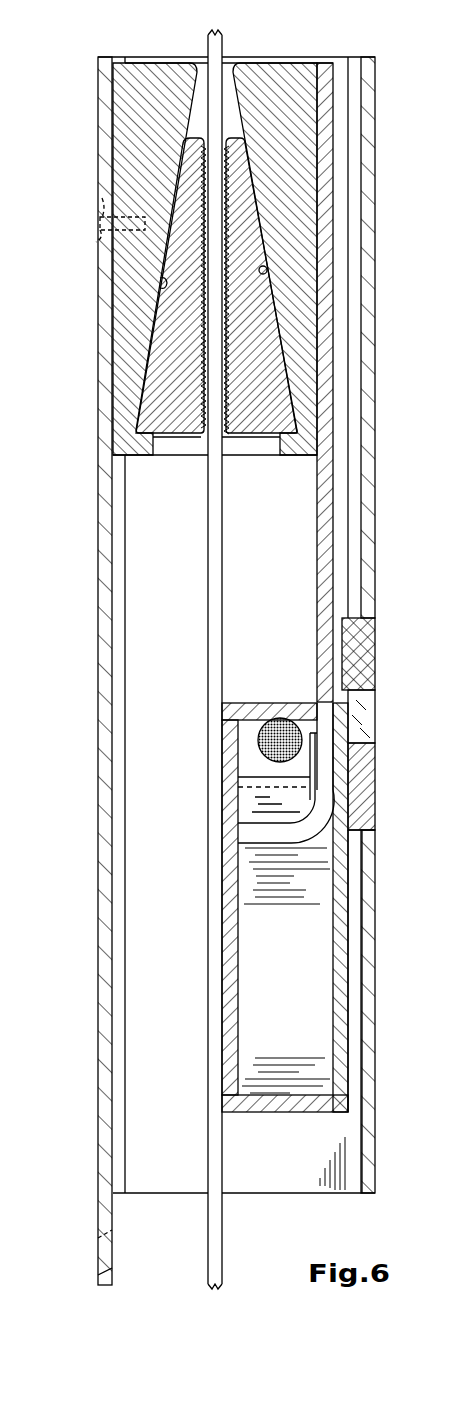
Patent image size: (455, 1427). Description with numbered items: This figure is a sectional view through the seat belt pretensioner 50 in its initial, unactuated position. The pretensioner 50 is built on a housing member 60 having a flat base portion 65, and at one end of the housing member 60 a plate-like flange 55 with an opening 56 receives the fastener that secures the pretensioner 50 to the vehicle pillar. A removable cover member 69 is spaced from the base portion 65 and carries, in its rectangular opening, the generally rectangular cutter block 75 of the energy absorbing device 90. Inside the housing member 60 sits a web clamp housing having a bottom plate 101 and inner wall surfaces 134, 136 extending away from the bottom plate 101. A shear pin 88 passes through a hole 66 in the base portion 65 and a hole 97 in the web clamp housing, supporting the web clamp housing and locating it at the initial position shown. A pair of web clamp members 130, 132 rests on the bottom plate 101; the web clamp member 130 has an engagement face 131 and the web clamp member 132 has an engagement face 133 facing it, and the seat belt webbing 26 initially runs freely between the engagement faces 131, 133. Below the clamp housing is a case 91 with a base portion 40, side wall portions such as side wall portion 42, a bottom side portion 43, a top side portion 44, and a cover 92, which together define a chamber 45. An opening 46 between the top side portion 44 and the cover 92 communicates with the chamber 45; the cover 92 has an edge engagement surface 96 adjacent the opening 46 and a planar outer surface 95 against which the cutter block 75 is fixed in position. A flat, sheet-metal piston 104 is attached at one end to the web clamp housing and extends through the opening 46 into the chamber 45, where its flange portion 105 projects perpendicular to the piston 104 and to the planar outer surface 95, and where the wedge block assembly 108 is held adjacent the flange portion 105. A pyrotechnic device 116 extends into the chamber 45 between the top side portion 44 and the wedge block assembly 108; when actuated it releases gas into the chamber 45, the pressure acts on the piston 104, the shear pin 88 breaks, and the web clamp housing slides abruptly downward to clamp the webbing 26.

The seat belt webbing 26 is at (216, 45).
The seat belt pretensioner 50 is at (386, 84).
The housing member 60 is at (86, 750).
The base portion 65 is at (104, 632).
The cover member 69 is at (368, 455).
The piston 104 is at (333, 340).
The bottom plate 101 is at (270, 443).
The web clamp member 130 is at (175, 322).
The engagement face 131 is at (203, 197).
The web clamp member 132 is at (250, 352).
The engagement face 133 is at (222, 233).
The inner wall surface 134 is at (167, 287).
The inner wall surface 136 is at (266, 266).
The shear pin 88 is at (100, 220).
The hole 97 is at (102, 198).
The hole 66 is at (96, 242).
The opening 46 is at (335, 668).
The cutter block 75 is at (390, 738).
The planar outer surface 95 is at (350, 780).
The energy absorbing device 90 is at (398, 795).
The edge engagement surface 96 is at (322, 712).
The top side portion 44 is at (275, 710).
The chamber 45 is at (252, 762).
The pyrotechnic device 116 is at (280, 720).
The wedge block assembly 108 is at (226, 793).
The flange portion 105 is at (275, 835).
The base portion 40 is at (238, 870).
The side wall portion 42 is at (297, 1039).
The case 91 is at (236, 988).
The cover 92 is at (335, 913).
The bottom side portion 43 is at (275, 1108).
The flange 55 is at (105, 1270).
The opening 56 is at (112, 1234).